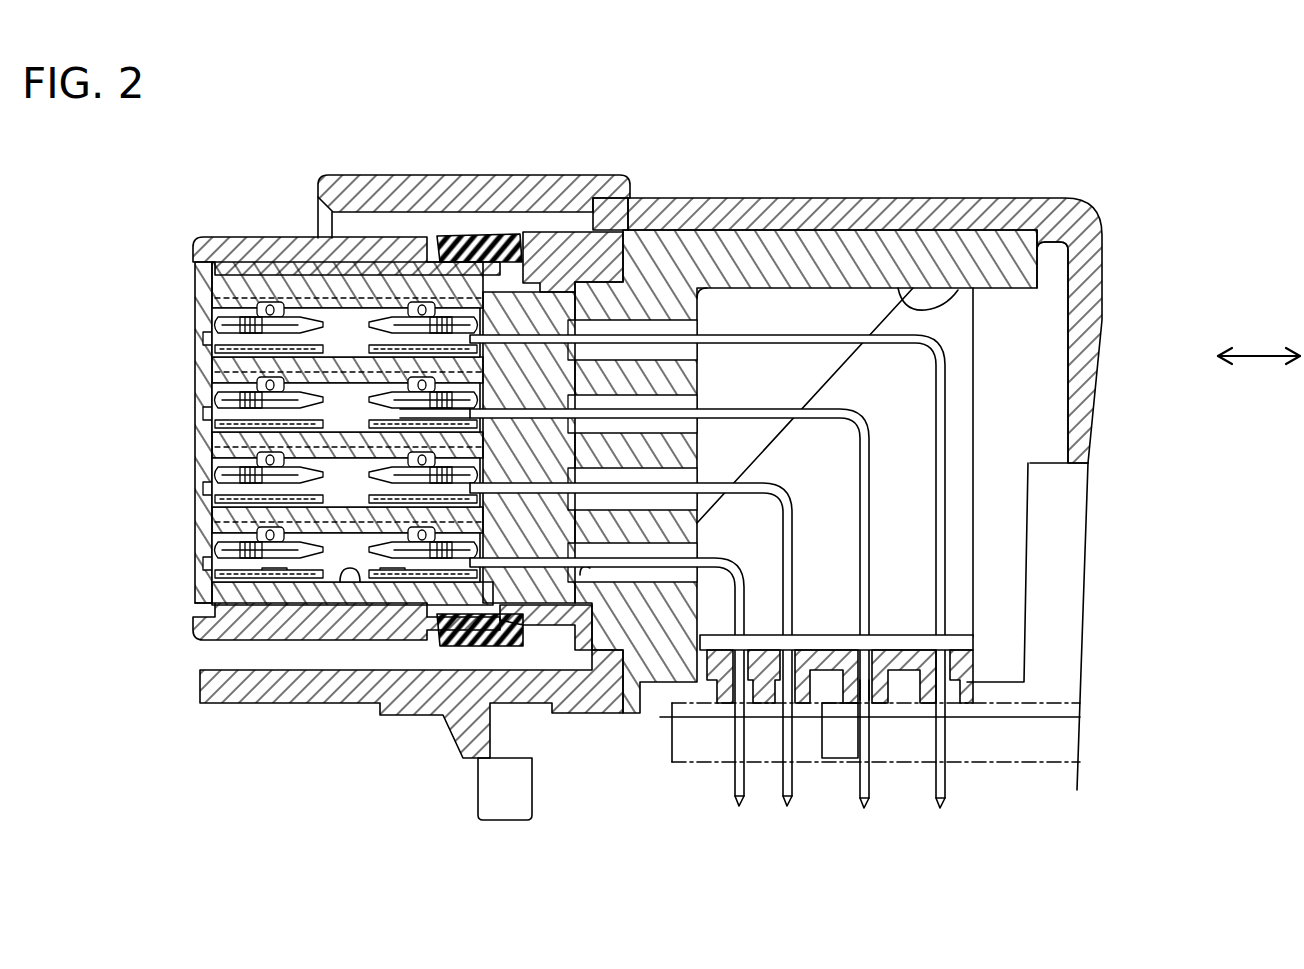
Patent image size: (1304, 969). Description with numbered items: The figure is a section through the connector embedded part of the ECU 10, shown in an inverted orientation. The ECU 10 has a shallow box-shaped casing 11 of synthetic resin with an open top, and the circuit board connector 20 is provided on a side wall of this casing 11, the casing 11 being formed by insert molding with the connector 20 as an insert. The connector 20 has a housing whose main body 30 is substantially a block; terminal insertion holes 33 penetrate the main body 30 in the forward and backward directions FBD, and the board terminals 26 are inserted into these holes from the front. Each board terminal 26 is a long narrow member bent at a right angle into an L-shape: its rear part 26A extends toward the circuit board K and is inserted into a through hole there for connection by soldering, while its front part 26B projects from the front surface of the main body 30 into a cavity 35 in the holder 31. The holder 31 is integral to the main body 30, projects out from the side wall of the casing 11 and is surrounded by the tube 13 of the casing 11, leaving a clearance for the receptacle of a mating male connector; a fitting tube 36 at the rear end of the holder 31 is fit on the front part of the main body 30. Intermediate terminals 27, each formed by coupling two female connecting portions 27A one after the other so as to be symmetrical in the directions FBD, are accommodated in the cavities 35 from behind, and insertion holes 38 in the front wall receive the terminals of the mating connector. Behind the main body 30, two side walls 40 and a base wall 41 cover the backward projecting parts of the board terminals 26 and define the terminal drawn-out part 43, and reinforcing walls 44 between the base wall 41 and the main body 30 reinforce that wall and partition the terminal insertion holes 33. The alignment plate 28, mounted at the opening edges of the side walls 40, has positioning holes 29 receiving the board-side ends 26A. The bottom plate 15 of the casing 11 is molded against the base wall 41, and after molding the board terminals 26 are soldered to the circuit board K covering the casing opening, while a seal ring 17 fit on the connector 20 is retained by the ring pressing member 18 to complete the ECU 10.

The ECU 10 is at (928, 172).
The casing 11 is at (722, 196).
The tube 13 is at (452, 196).
The bottom plate 15 is at (847, 215).
The seal ring 17 is at (500, 250).
The ring pressing member 18 is at (258, 237).
The circuit board connector 20 is at (183, 503).
The board terminal 26 is at (865, 553).
The rear part of board terminal 26A is at (868, 806).
The front part of board terminal 26B is at (413, 412).
The intermediate terminal 27 is at (343, 300).
The female connecting portion 27A is at (283, 574).
The alignment plate 28 is at (977, 663).
The positioning hole 29 is at (862, 690).
The main body 30 is at (548, 300).
The holder 31 is at (357, 275).
The terminal insertion hole 33 is at (585, 567).
The cavity 35 is at (349, 574).
The fitting tube 36 is at (598, 262).
The insertion hole 38 is at (203, 339).
The side wall 40 is at (953, 340).
The base wall 41 is at (940, 257).
The terminal drawn-out part 43 is at (963, 420).
The reinforcing wall 44 is at (1023, 250).
The circuit board K is at (997, 765).
The forward and backward directions FBD is at (1259, 342).